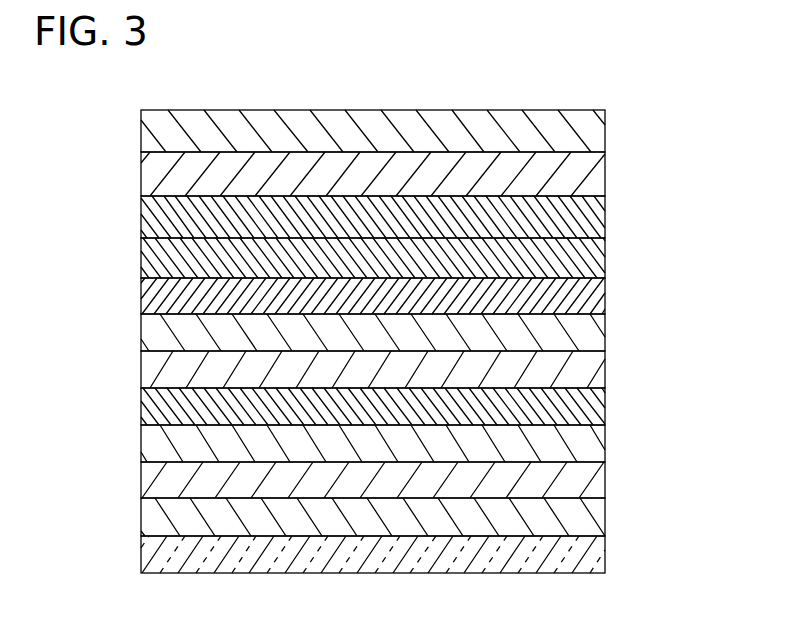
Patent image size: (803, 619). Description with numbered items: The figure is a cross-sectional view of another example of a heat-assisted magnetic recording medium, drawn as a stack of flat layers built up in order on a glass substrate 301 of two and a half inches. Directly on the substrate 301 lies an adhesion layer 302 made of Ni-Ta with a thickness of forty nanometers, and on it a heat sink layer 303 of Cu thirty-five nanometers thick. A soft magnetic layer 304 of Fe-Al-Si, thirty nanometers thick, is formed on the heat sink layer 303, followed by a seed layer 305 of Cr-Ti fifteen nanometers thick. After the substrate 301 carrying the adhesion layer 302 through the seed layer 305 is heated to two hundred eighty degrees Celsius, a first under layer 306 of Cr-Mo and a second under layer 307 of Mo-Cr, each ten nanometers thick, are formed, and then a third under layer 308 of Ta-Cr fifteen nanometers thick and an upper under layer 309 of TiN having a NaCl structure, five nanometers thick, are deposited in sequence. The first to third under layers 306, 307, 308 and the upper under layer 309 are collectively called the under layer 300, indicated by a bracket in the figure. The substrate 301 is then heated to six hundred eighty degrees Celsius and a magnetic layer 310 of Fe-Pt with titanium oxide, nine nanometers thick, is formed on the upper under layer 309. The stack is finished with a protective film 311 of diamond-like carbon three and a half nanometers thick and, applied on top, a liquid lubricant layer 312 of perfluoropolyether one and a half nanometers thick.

The under layer 300 is at (705, 228).
The glass substrate 301 is at (590, 555).
The adhesion layer 302 is at (588, 513).
The heat sink layer 303 is at (590, 478).
The soft magnetic layer 304 is at (588, 440).
The seed layer 305 is at (595, 403).
The first under layer 306 is at (597, 375).
The second under layer 307 is at (593, 332).
The third under layer 308 is at (593, 292).
The upper under layer 309 is at (590, 260).
The magnetic layer 310 is at (590, 217).
The protective film 311 is at (598, 171).
The liquid lubricant layer 312 is at (597, 134).